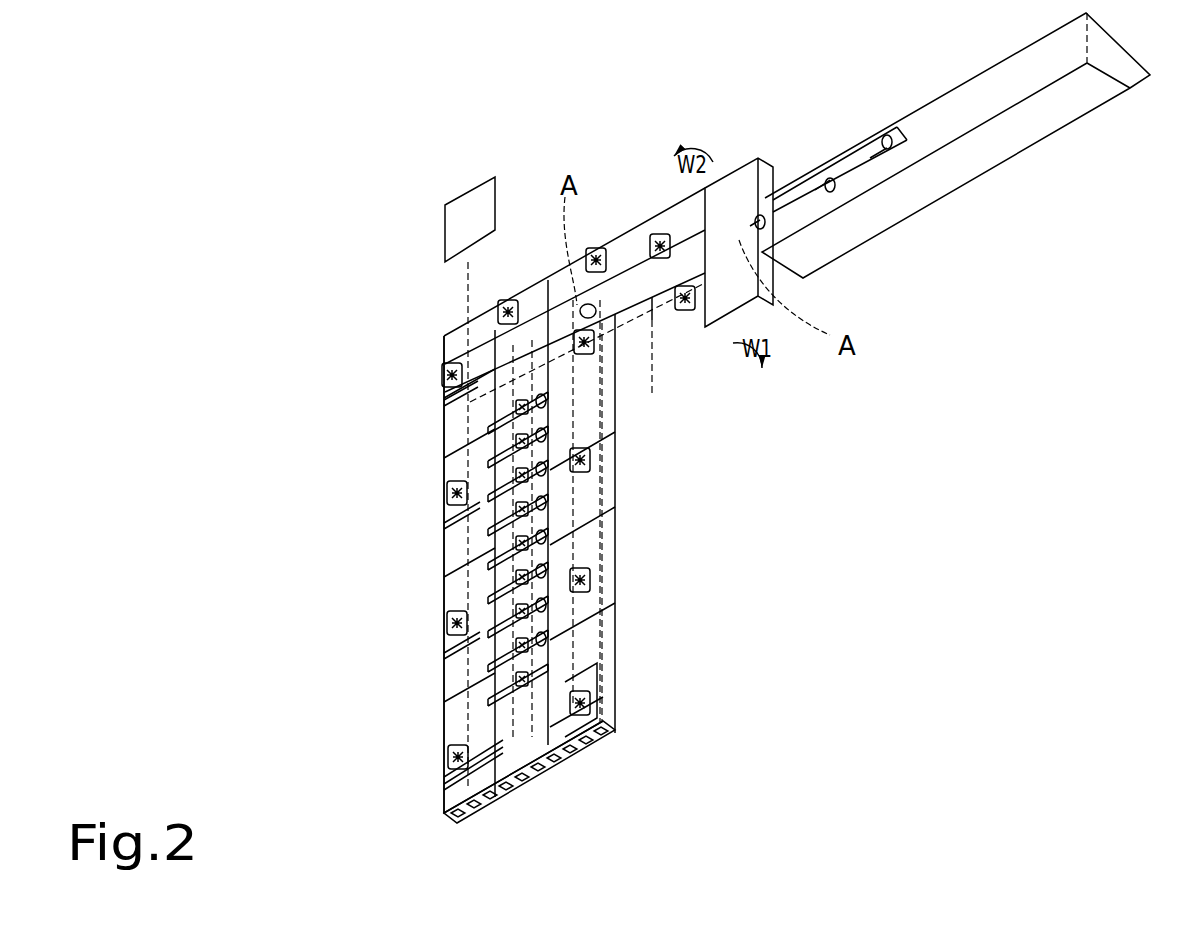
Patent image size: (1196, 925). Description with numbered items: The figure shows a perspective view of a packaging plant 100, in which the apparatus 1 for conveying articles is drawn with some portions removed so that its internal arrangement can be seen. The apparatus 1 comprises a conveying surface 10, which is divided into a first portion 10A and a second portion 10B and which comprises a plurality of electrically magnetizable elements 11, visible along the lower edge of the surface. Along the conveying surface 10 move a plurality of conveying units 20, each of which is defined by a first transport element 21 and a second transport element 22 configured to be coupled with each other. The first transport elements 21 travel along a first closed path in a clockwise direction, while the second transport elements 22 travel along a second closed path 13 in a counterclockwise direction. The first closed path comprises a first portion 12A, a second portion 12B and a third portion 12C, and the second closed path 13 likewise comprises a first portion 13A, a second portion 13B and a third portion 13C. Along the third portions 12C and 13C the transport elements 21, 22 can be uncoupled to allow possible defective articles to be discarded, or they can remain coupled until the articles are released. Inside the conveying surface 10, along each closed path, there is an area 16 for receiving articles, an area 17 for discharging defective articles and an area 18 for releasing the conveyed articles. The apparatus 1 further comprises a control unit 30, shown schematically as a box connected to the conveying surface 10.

The apparatus 1 is at (977, 505).
The conveying surface 10 is at (747, 665).
The first portion 10A is at (587, 500).
The second portion 10B is at (437, 548).
The electrically magnetizable elements 11 is at (605, 740).
The first portion 12A is at (445, 665).
The second portion 12B is at (630, 355).
The third portion 12C is at (560, 375).
The second closed path 13 is at (467, 430).
The first portion 13A is at (480, 650).
The second portion 13B is at (467, 717).
The third portion 13C is at (647, 262).
The area for receiving articles 16 is at (437, 570).
The area for discharging defective articles 17 is at (627, 243).
The area for releasing the conveyed articles 18 is at (740, 148).
The conveying unit 20 is at (553, 355).
The first transport element 21 is at (597, 692).
The second transport element 22 is at (440, 768).
The control unit 30 is at (481, 231).
The packaging plant 100 is at (953, 308).